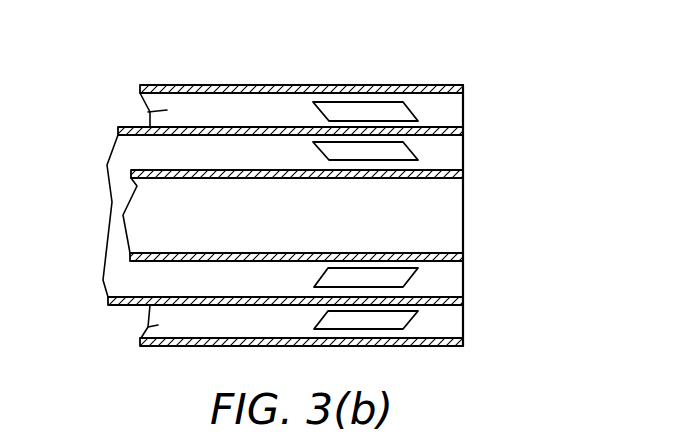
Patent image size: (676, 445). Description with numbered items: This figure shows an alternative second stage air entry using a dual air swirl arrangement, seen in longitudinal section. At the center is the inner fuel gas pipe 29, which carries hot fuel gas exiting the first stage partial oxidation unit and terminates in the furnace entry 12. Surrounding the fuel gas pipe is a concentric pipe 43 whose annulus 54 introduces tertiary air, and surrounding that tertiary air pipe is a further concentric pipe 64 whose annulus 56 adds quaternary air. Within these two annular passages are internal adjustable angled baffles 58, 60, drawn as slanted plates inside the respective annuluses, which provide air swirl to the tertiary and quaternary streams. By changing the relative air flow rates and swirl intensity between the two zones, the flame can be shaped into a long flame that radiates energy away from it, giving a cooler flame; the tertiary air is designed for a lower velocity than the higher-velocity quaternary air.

The furnace entry 12 is at (437, 228).
The inner fuel gas pipe 29 is at (262, 178).
The concentric pipe 43 is at (140, 120).
The annulus 54 is at (167, 155).
The annulus 56 is at (148, 112).
The internal adjustable angled baffles 58 is at (400, 153).
The internal adjustable angled baffles 60 is at (400, 110).
The concentric pipe 64 is at (210, 83).